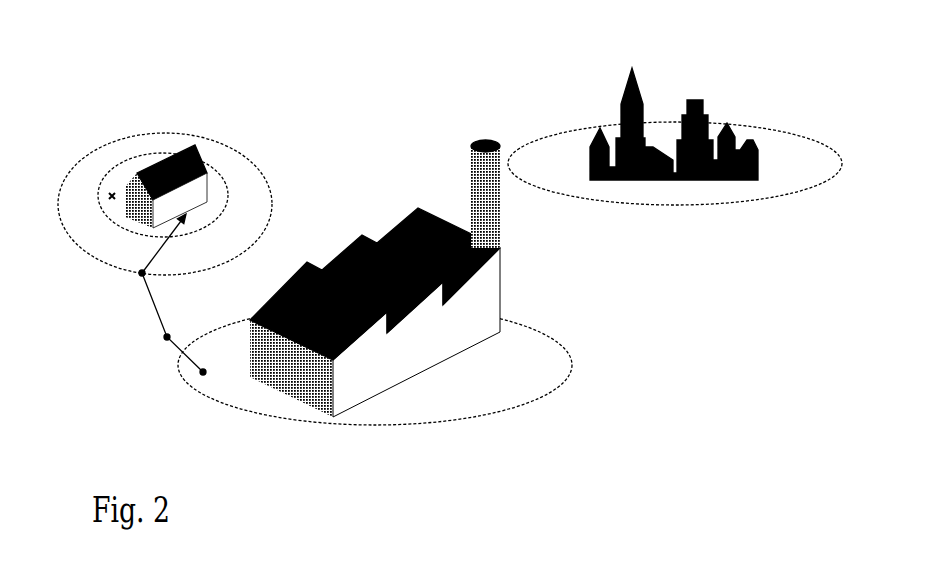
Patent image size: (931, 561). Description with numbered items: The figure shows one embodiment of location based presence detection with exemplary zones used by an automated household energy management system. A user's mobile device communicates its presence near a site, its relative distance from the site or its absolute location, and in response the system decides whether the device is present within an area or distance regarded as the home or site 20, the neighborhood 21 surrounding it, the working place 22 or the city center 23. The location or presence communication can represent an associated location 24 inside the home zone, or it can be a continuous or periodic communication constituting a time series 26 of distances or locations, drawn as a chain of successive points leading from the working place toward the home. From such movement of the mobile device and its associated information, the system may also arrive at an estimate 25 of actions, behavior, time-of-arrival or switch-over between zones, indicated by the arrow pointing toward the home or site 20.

The home or site 20 is at (202, 217).
The neighborhood 21 is at (253, 183).
The working place 22 is at (548, 362).
The city center 23 is at (663, 200).
The associated location 24 is at (108, 188).
The estimate 25 is at (153, 255).
The time series 26 is at (153, 300).